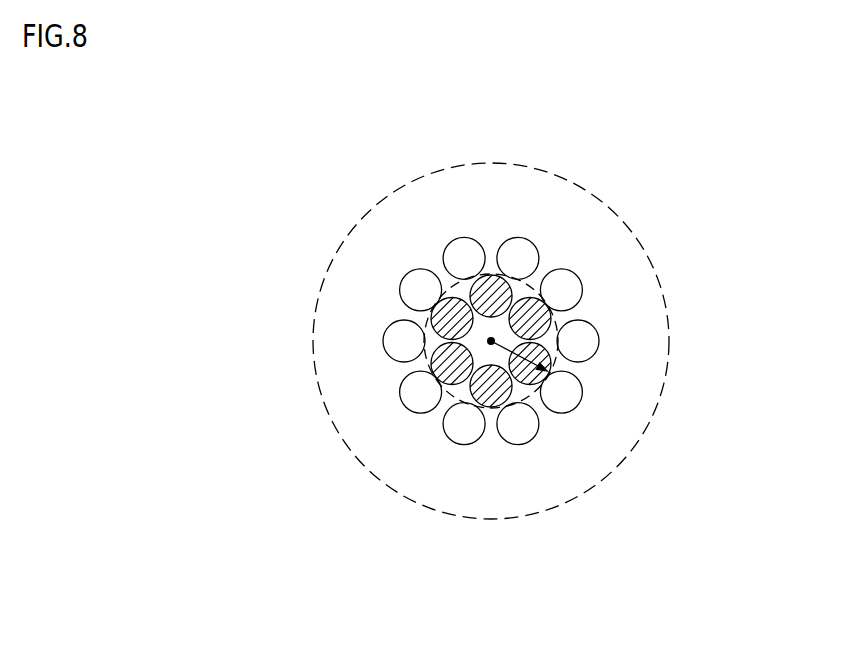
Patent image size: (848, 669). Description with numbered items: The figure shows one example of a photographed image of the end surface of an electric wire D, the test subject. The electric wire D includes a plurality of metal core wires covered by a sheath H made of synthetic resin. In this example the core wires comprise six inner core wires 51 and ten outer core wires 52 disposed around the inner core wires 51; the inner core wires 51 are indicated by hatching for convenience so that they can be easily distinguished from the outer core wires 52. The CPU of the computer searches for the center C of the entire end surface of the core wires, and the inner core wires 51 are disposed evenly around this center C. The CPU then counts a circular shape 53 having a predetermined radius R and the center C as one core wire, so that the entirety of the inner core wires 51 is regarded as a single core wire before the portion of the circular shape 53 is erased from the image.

The inner core wires 51 is at (480, 403).
The outer core wires 52 is at (512, 245).
The circular shape 53 is at (553, 313).
The electric wire D is at (613, 164).
The center C is at (491, 341).
The radius R is at (549, 372).
The sheath H is at (312, 342).